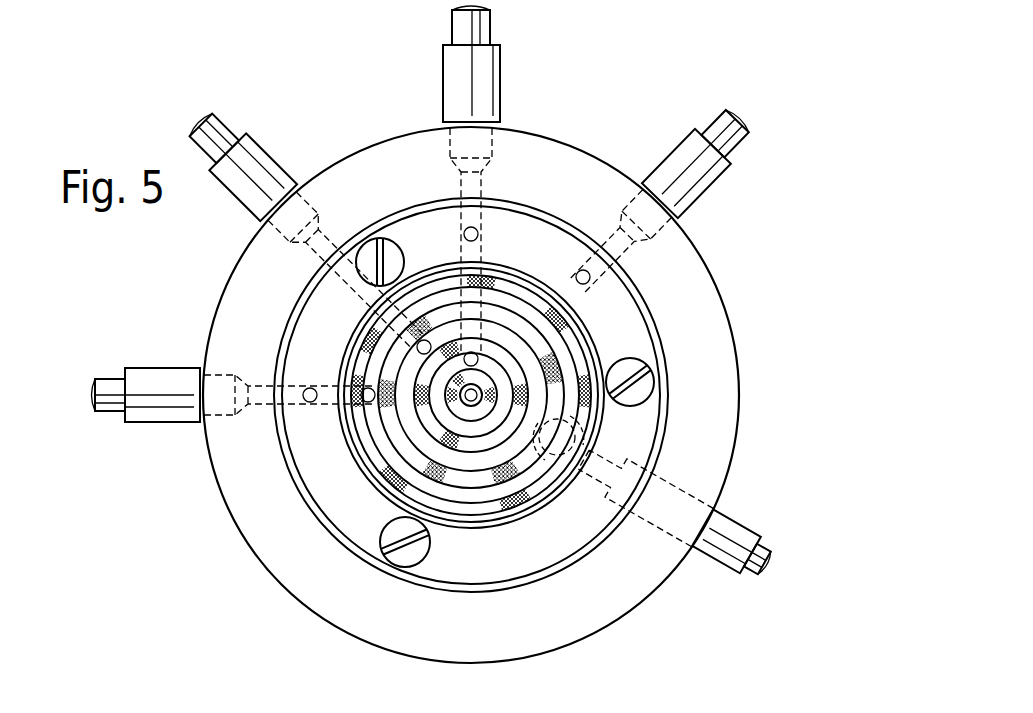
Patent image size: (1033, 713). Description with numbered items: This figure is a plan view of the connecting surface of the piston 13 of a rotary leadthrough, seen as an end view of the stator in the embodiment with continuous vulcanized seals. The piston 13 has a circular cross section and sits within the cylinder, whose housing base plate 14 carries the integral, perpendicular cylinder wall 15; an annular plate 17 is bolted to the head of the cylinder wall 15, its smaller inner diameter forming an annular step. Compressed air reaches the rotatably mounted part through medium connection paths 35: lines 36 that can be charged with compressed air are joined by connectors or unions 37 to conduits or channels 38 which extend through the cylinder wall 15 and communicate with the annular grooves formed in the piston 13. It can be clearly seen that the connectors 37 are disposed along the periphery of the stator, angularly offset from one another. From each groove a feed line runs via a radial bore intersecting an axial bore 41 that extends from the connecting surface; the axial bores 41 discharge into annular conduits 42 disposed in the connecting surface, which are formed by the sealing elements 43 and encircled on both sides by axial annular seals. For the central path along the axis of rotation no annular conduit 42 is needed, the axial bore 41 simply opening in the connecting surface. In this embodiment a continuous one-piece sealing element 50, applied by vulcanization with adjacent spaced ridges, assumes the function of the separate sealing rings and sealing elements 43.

The piston 13 is at (520, 262).
The housing base plate 14 is at (690, 277).
The cylinder wall 15 is at (418, 236).
The annular plate 17 is at (325, 470).
The medium connection paths 35 is at (335, 225).
The lines 36 is at (215, 122).
The connectors or unions 37 is at (477, 82).
The conduits or channels 38 is at (470, 185).
The axial bore 41 is at (426, 337).
The annular conduits 42 is at (415, 478).
The sealing elements 43 is at (495, 400).
The continuous sealing element 50 is at (552, 508).